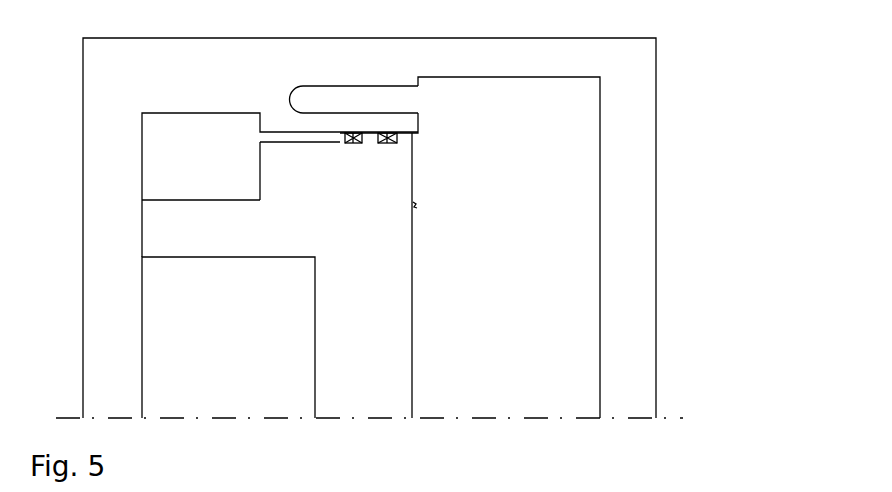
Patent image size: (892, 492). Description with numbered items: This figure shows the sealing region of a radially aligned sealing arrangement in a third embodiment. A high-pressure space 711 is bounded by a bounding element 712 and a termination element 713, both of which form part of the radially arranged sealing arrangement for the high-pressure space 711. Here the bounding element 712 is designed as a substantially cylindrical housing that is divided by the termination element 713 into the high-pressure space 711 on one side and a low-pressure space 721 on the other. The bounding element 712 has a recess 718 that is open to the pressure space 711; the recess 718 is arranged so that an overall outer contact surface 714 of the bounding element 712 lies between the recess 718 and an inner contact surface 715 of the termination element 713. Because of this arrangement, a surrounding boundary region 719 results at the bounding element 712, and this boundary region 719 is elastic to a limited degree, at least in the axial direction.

The high-pressure space 711 is at (521, 331).
The bounding element 712 is at (645, 355).
The termination element 713 is at (393, 287).
The outer contact surface 714 is at (364, 133).
The inner contact surface 715 is at (350, 133).
The recess 718 is at (387, 98).
The boundary region 719 is at (418, 121).
The low-pressure space 721 is at (206, 331).